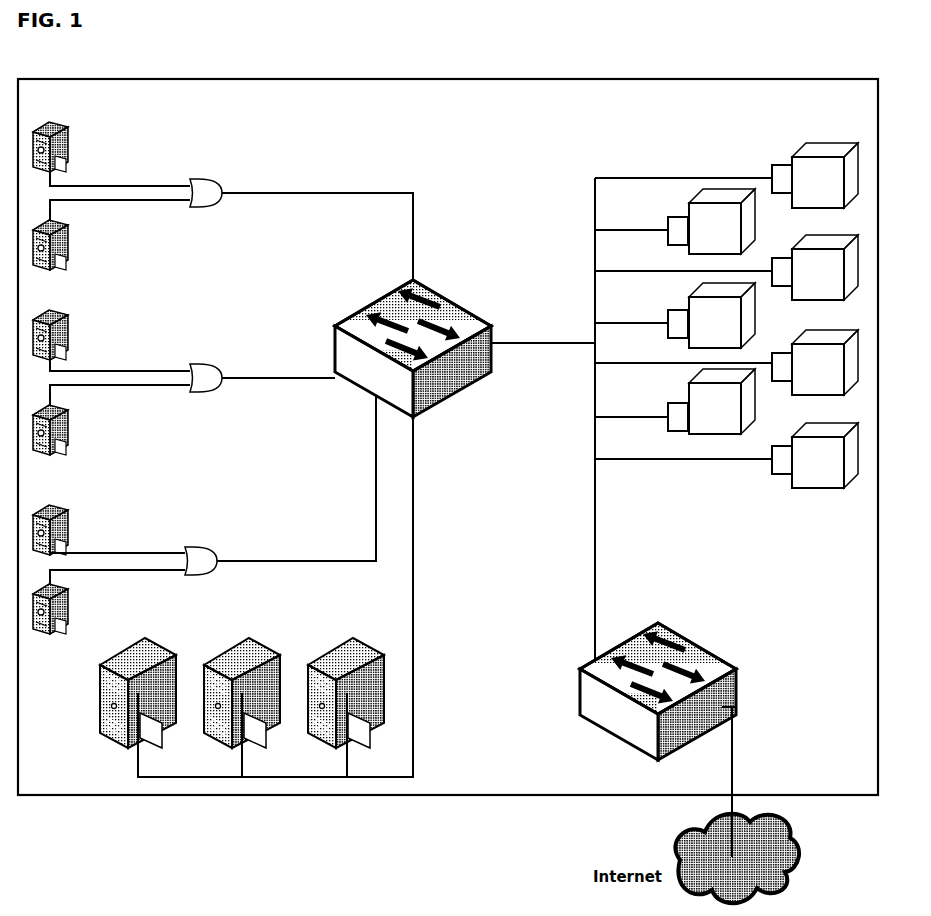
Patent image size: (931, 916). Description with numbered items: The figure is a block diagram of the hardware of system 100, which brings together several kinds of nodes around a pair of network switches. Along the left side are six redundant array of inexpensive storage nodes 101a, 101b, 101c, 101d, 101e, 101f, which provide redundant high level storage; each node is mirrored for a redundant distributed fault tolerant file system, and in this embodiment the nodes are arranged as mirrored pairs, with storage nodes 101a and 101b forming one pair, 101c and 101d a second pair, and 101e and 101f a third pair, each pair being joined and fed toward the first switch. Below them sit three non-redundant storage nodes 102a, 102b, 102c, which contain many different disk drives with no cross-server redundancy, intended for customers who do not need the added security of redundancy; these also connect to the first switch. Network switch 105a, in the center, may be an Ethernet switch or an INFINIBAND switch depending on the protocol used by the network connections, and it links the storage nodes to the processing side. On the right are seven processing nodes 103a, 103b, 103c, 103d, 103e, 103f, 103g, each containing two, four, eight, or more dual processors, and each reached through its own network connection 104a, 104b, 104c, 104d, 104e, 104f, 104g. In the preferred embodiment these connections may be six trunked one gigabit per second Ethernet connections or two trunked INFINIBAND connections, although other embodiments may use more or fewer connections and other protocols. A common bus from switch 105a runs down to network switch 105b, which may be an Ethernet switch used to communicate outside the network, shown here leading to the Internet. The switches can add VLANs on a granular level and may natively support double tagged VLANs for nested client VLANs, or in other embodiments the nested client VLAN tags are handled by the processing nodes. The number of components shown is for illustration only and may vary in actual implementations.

The system 100 is at (448, 427).
The redundant array of inexpensive storage node 101a is at (111, 154).
The redundant array of inexpensive storage node 101b is at (111, 235).
The redundant array of inexpensive storage node 101c is at (111, 340).
The redundant array of inexpensive storage node 101d is at (111, 420).
The redundant array of inexpensive storage node 101e is at (109, 530).
The redundant array of inexpensive storage node 101f is at (109, 602).
The non-redundant storage node 102a is at (256, 597).
The non-redundant storage node 102b is at (242, 699).
The non-redundant storage node 102c is at (346, 699).
The processing node 103a is at (825, 175).
The processing node 103b is at (825, 267).
The processing node 103c is at (825, 362).
The processing node 103d is at (825, 455).
The processing node 103e is at (722, 221).
The processing node 103f is at (722, 315).
The processing node 103g is at (722, 401).
The network connection 104a is at (693, 166).
The network connection 104b is at (695, 258).
The network connection 104c is at (695, 352).
The network connection 104d is at (695, 446).
The network connection 104e is at (641, 221).
The network connection 104f is at (641, 314).
The network connection 104g is at (641, 406).
The network switch 105a is at (413, 345).
The network switch 105b is at (645, 740).